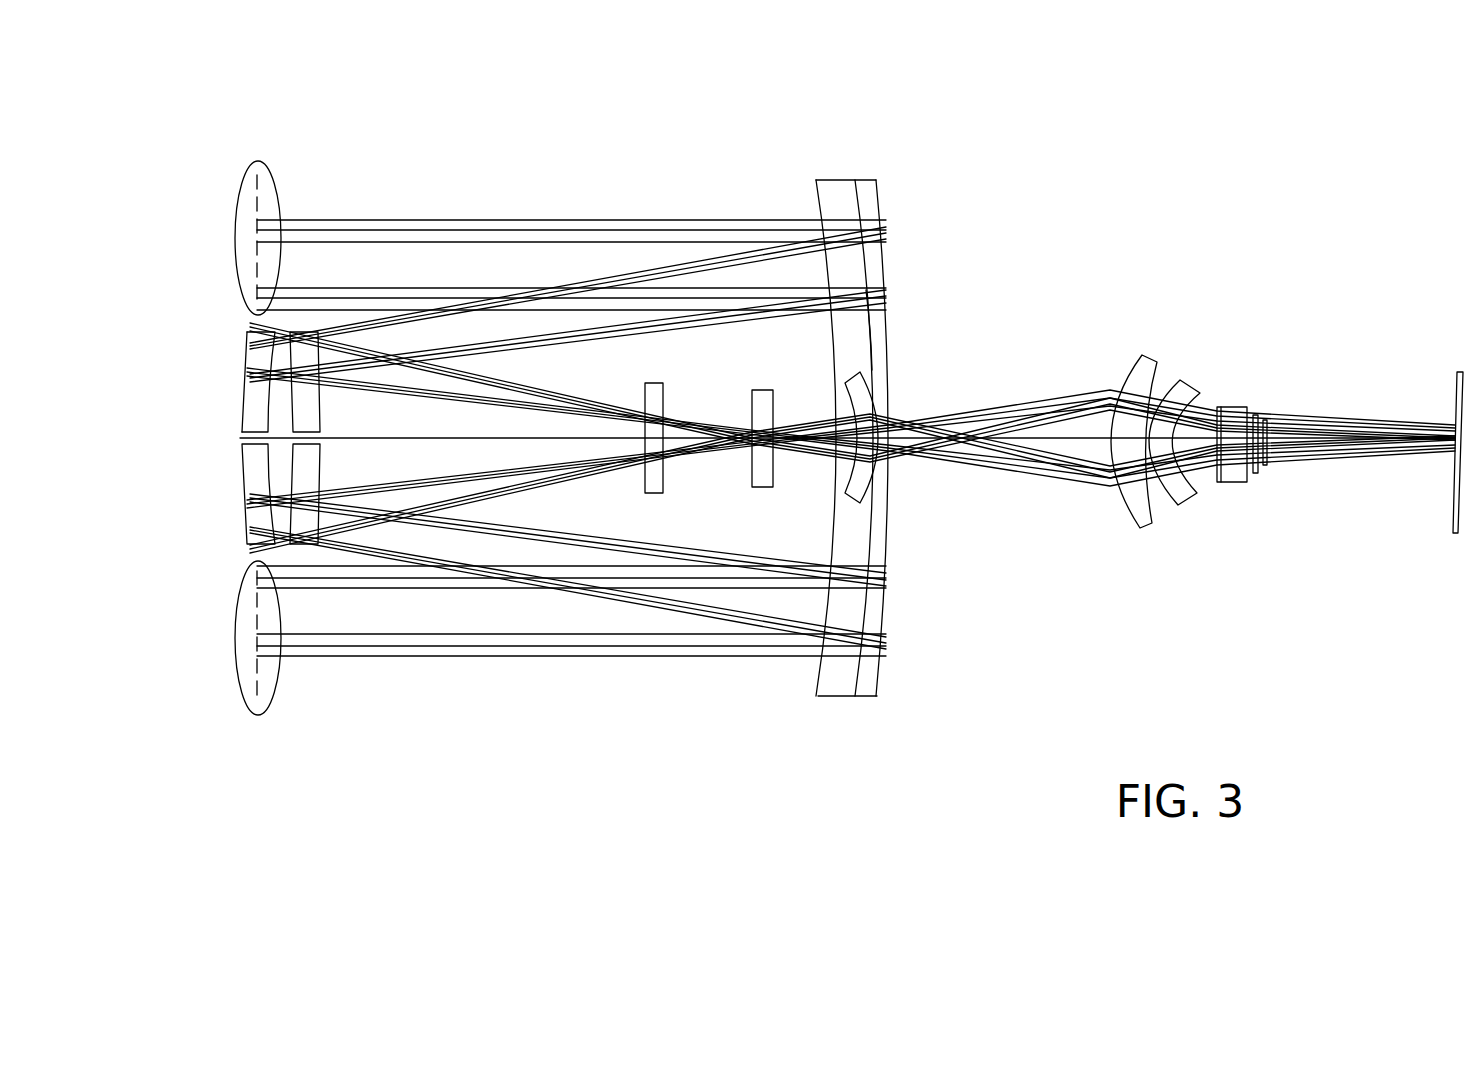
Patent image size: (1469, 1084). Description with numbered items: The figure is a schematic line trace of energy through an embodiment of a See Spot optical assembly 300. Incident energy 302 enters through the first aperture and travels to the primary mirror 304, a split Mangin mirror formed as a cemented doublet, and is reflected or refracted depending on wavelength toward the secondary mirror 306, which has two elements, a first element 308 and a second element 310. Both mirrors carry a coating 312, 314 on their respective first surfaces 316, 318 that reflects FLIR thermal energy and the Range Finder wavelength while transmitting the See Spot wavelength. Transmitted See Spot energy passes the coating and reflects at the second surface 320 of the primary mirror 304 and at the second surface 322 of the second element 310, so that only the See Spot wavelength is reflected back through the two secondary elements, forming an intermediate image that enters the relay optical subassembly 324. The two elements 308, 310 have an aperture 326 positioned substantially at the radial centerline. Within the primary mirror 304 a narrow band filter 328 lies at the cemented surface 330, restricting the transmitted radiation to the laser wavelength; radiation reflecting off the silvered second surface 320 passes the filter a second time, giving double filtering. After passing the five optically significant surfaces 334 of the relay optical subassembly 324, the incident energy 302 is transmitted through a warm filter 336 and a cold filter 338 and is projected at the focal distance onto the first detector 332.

The See Spot optical assembly 300 is at (1140, 262).
The incident energy 302 is at (238, 192).
The primary mirror 304 is at (865, 444).
The secondary mirror 306 is at (278, 480).
The first element 308 is at (272, 355).
The second element 310 is at (206, 371).
The coating 312 is at (816, 196).
The coating 314 is at (320, 410).
The first surface 316 is at (818, 672).
The first surface 318 is at (320, 460).
The second surface 320 is at (878, 208).
The second surface 322 is at (245, 396).
The relay optical subassembly 324 is at (997, 538).
The aperture 326 is at (240, 438).
The narrow band filter 328 is at (870, 263).
The cemented surface 330 is at (876, 331).
The first detector 332 is at (1455, 400).
The optically significant surfaces 334 is at (1115, 390).
The warm filter 336 is at (1230, 412).
The cold filter 338 is at (1267, 477).